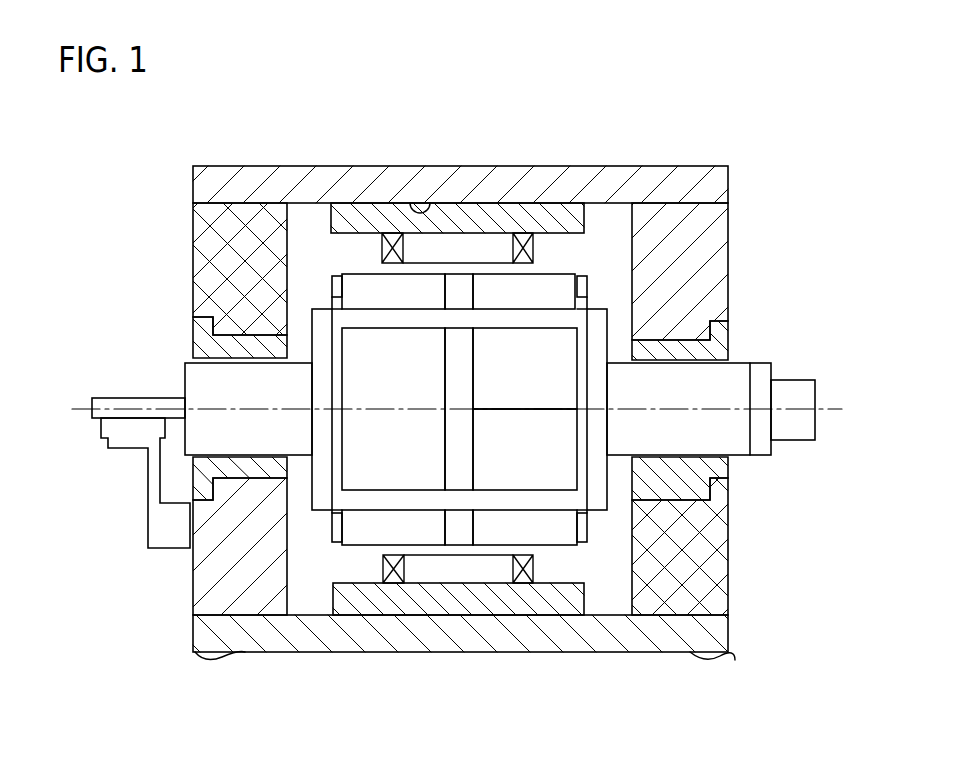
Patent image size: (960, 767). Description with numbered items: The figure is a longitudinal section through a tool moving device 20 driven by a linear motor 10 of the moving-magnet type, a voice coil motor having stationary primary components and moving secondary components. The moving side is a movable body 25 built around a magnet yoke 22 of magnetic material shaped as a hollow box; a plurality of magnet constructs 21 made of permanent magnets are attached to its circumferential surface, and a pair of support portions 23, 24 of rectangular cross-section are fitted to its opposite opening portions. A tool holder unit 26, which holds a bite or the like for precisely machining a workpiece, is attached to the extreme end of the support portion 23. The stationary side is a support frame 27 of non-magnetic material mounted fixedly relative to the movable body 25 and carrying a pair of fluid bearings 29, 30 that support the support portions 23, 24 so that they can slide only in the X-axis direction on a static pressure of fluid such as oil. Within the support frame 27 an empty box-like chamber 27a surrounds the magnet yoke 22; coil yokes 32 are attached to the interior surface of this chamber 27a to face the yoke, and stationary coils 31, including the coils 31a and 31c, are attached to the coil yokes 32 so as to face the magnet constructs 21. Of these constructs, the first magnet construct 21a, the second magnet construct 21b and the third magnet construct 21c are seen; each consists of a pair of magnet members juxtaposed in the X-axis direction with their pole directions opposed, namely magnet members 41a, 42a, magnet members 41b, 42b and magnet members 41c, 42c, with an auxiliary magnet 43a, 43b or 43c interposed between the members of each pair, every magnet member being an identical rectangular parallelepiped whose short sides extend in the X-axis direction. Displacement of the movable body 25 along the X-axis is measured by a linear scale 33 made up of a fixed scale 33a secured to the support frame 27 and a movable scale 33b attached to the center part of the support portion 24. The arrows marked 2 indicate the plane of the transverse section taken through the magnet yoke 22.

The section line II-II 2 is at (497, 182).
The linear motor 10 is at (602, 247).
The tool moving device 20 is at (702, 147).
The magnet constructs 21 is at (337, 258).
The first magnet construct 21a is at (337, 287).
The second magnet construct 21b is at (333, 335).
The third magnet construct 21c is at (340, 537).
The magnet yoke 22 is at (573, 320).
The support portion 23 is at (732, 437).
The support portion 24 is at (203, 383).
The movable body 25 is at (615, 497).
The tool holder unit 26 is at (795, 390).
The support frame 27 is at (357, 165).
The empty box-like chamber 27a is at (411, 204).
The fluid bearing 29 is at (720, 350).
The fluid bearing 30 is at (225, 352).
The stationary coils 31 is at (543, 575).
The stationary coil 31a is at (548, 212).
The stationary coil 31c is at (398, 583).
The coil yokes 32 is at (516, 212).
The linear scale 33 is at (82, 427).
The fixed scale 33a is at (108, 432).
The movable scale 33b is at (122, 402).
The magnet member 41a is at (525, 341).
The magnet member 41b is at (533, 469).
The magnet member 41c is at (570, 520).
The magnet member 42a is at (362, 302).
The magnet member 42b is at (408, 469).
The magnet member 42c is at (370, 533).
The auxiliary magnet 43a is at (453, 303).
The auxiliary magnet 43b is at (467, 467).
The auxiliary magnet 43c is at (463, 540).